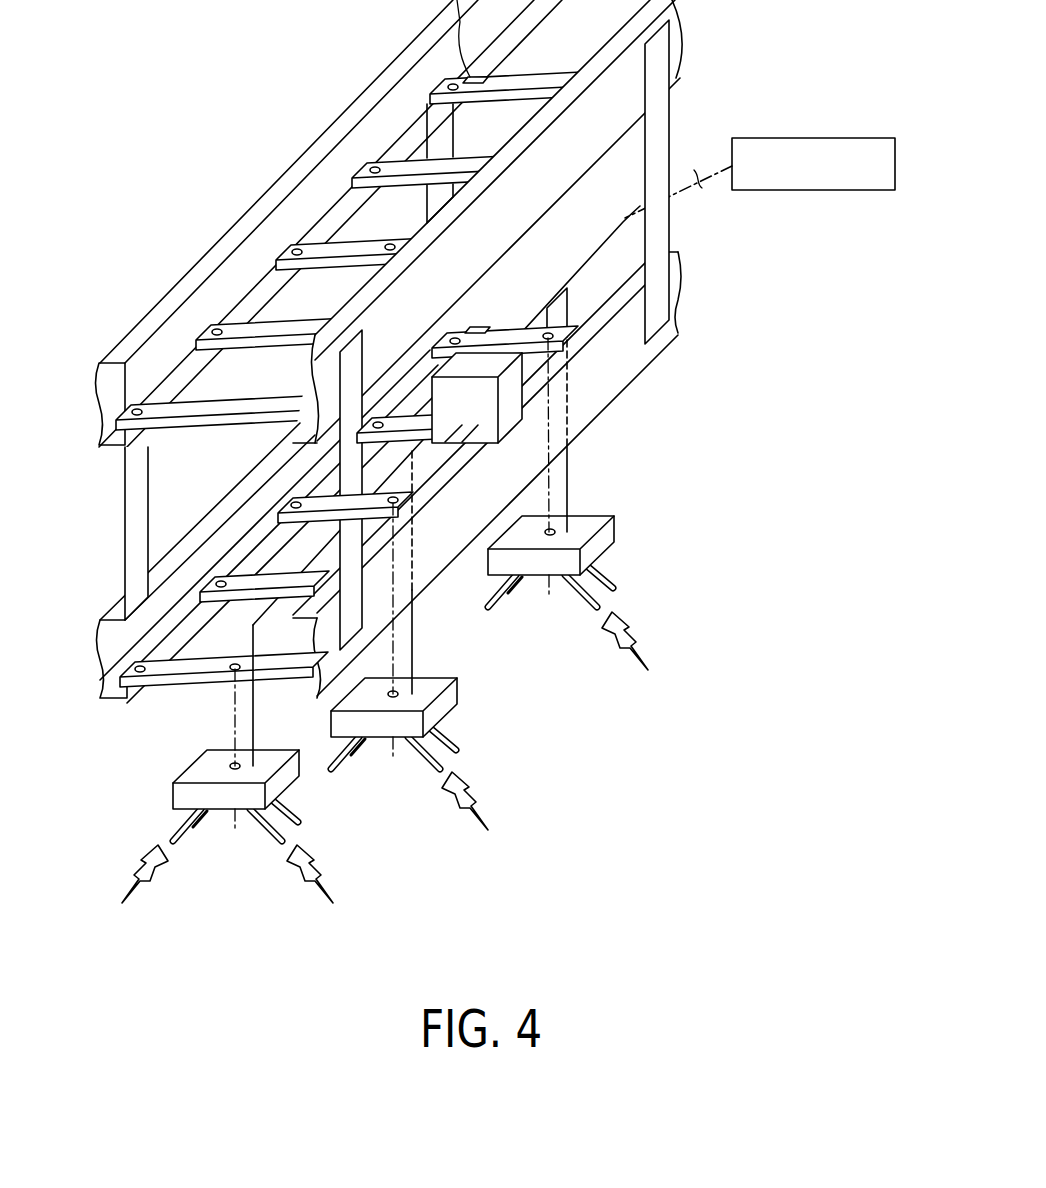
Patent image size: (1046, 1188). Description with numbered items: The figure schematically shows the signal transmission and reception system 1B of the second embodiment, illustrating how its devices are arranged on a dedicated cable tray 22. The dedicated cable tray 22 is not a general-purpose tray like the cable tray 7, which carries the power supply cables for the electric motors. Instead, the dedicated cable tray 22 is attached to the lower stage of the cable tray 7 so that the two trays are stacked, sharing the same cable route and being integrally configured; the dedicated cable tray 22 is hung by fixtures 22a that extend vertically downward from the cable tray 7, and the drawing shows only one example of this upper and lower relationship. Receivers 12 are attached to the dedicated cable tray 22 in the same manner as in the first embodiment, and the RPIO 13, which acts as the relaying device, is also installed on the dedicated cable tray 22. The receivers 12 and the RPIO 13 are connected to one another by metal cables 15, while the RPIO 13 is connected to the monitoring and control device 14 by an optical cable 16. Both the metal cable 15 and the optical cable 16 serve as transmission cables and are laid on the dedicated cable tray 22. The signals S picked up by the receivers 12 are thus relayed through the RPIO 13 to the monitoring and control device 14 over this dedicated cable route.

The cable tray 7 is at (289, 170).
The receiver 12 is at (171, 798).
The RPIO 13 is at (483, 362).
The monitoring and control device 14 is at (832, 138).
The metal cable 15 is at (570, 488).
The optical cable 16 is at (693, 184).
The dedicated cable tray 22 is at (394, 361).
The fixture 22a is at (453, 130).
The signal S is at (626, 632).
The signal transmission and reception system 1B is at (704, 581).